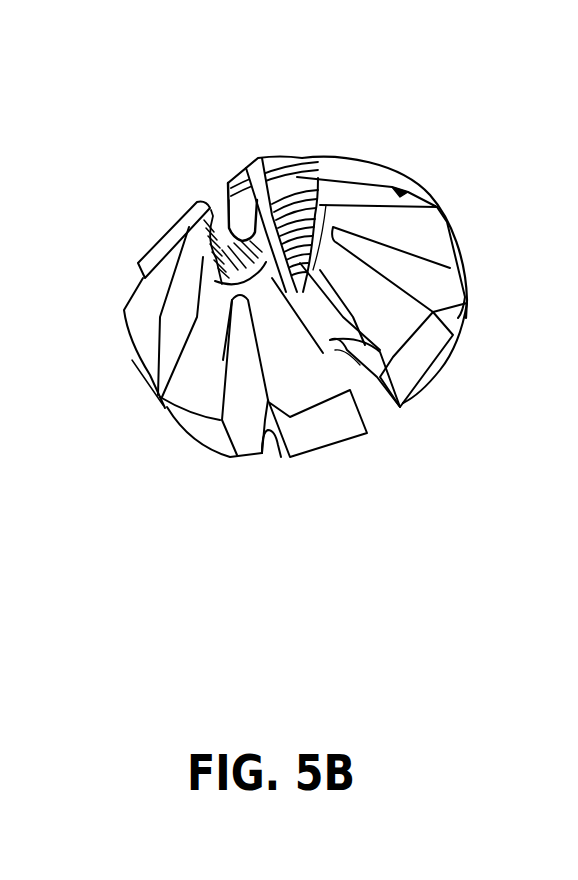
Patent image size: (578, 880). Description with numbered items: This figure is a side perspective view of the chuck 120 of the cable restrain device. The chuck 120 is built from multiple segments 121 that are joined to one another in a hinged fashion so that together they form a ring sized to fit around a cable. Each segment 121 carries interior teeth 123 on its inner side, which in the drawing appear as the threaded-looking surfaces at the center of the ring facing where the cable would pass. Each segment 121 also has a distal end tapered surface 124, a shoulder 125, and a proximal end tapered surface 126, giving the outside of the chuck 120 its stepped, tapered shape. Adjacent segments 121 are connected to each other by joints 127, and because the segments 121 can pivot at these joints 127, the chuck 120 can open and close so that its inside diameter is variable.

The chuck 120 is at (427, 110).
The segments 121 is at (121, 341).
The interior teeth 123 is at (226, 180).
The distal end tapered surface 124 is at (300, 430).
The shoulder 125 is at (270, 440).
The proximal end tapered surface 126 is at (256, 460).
The joints 127 is at (377, 400).